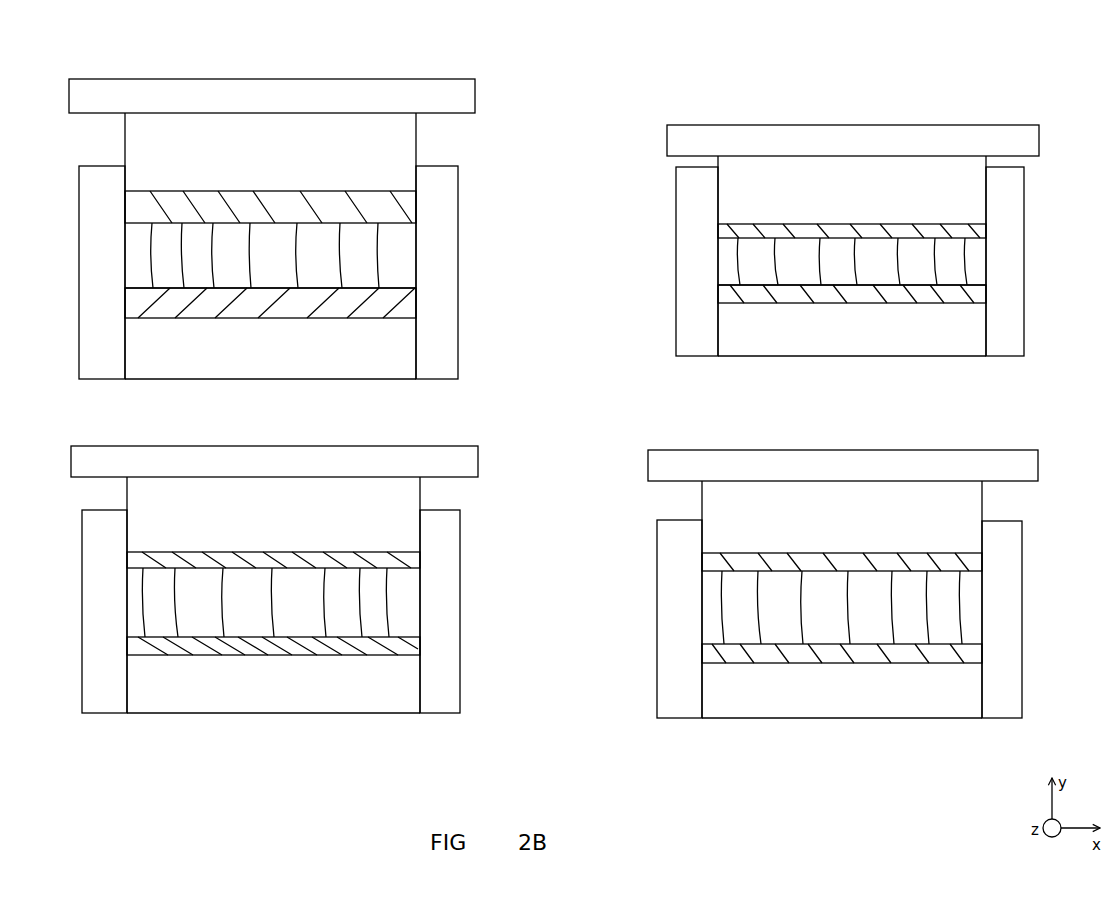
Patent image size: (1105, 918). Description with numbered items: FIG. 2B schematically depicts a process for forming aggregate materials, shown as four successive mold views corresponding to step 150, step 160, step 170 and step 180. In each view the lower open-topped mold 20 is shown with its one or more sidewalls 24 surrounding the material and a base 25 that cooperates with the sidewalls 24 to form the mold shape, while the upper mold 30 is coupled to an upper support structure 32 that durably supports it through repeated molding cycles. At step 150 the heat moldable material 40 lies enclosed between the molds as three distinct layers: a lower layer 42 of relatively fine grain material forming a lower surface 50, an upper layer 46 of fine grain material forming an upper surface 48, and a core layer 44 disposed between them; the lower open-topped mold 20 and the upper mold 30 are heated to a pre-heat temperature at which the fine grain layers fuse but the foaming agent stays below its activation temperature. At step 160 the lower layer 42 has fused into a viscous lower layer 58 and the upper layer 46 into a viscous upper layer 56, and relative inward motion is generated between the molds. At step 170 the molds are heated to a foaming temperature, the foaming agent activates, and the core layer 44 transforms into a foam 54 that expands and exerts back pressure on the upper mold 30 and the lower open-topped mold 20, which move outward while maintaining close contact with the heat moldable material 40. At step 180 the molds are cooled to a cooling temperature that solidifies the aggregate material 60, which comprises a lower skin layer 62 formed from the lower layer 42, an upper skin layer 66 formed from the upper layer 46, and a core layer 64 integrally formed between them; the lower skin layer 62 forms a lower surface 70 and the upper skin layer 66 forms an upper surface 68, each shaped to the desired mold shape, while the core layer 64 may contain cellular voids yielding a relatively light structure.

The lower open-topped mold 20 is at (453, 275).
The sidewalls 24 is at (98, 372).
The base 25 is at (272, 366).
The upper mold 30 is at (406, 147).
The upper support structure 32 is at (434, 80).
The heat moldable material 40 is at (393, 322).
The lower layer 42 is at (195, 310).
The core layer 44 is at (138, 270).
The upper layer 46 is at (416, 205).
The upper surface 48 is at (273, 191).
The lower surface 50 is at (290, 318).
The foam 54 is at (977, 602).
The viscous upper layer 56 is at (896, 225).
The viscous lower layer 58 is at (758, 295).
The aggregate material 60 is at (125, 604).
The lower skin layer 62 is at (180, 650).
The core layer 64 is at (418, 606).
The upper skin layer 66 is at (308, 556).
The upper surface 68 is at (212, 552).
The lower surface 70 is at (283, 657).
The step 150 is at (528, 80).
The step 160 is at (1076, 83).
The step 170 is at (1082, 432).
The step 180 is at (515, 487).